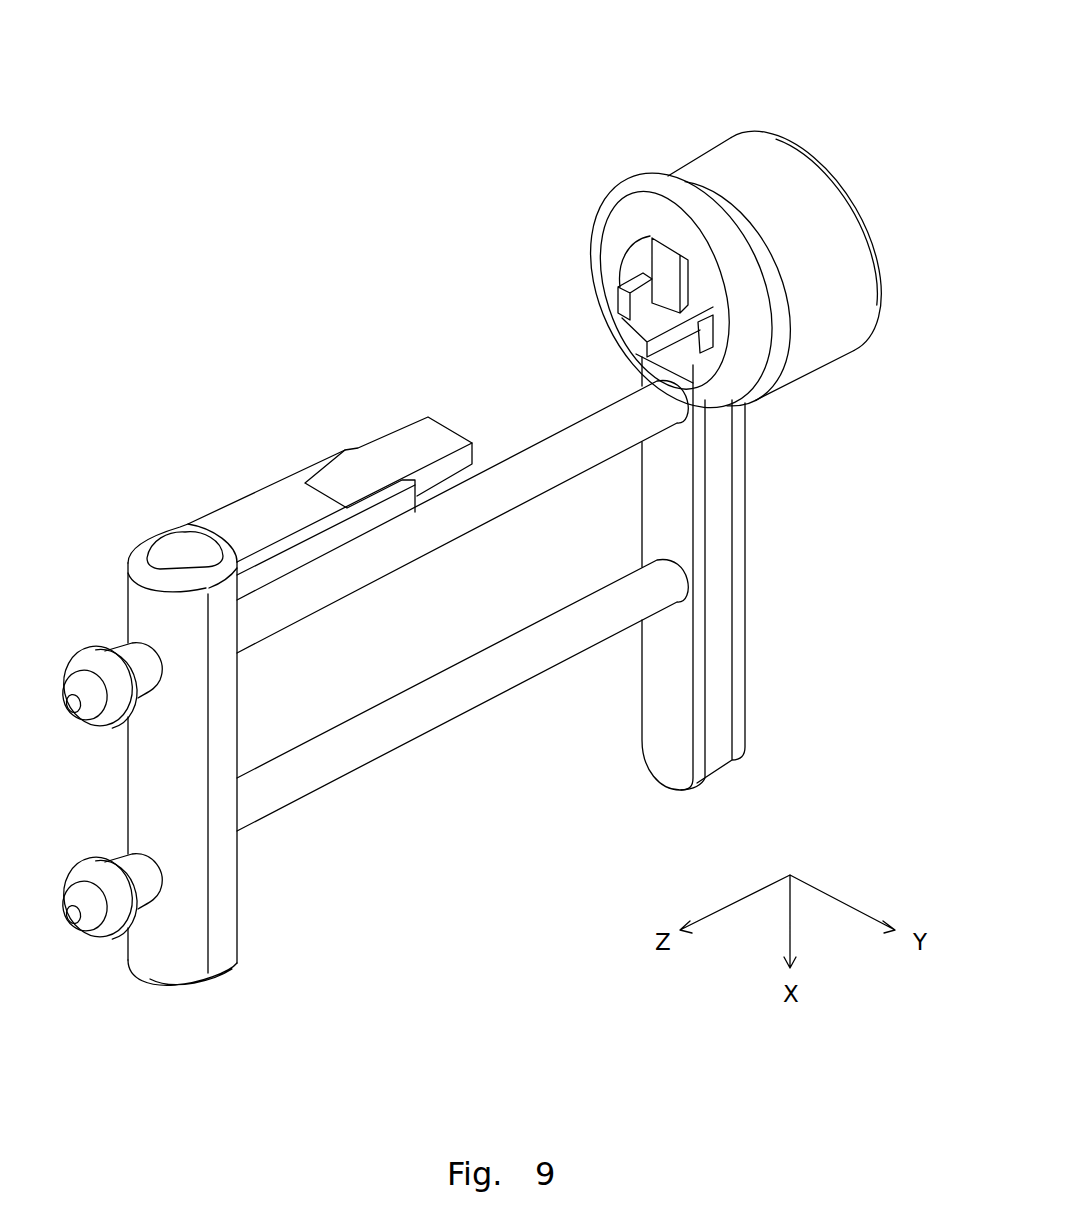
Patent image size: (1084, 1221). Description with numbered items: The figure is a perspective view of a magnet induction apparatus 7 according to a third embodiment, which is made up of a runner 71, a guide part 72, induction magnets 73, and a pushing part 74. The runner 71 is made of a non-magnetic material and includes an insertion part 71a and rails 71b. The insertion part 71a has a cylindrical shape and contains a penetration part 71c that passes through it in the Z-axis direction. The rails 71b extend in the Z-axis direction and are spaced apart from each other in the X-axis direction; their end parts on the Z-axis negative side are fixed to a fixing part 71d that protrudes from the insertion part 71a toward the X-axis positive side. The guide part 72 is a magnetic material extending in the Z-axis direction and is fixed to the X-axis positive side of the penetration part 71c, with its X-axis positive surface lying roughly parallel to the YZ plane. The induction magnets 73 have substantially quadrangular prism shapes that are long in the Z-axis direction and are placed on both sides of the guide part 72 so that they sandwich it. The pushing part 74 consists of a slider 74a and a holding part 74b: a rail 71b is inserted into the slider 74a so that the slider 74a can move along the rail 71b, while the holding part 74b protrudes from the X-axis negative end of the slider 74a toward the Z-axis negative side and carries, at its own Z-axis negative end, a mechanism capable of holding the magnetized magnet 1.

The magnet induction apparatus 7 is at (890, 37).
The runner 71 is at (862, 126).
The insertion part 71a is at (882, 191).
The rails 71b is at (384, 736).
The penetration part 71c is at (631, 244).
The fixing part 71d is at (737, 556).
The guide part 72 is at (663, 262).
The induction magnets 73 is at (626, 307).
The pushing part 74 is at (217, 495).
The slider 74a is at (135, 770).
The holding part 74b is at (266, 500).
The magnetized magnet 1 is at (403, 443).